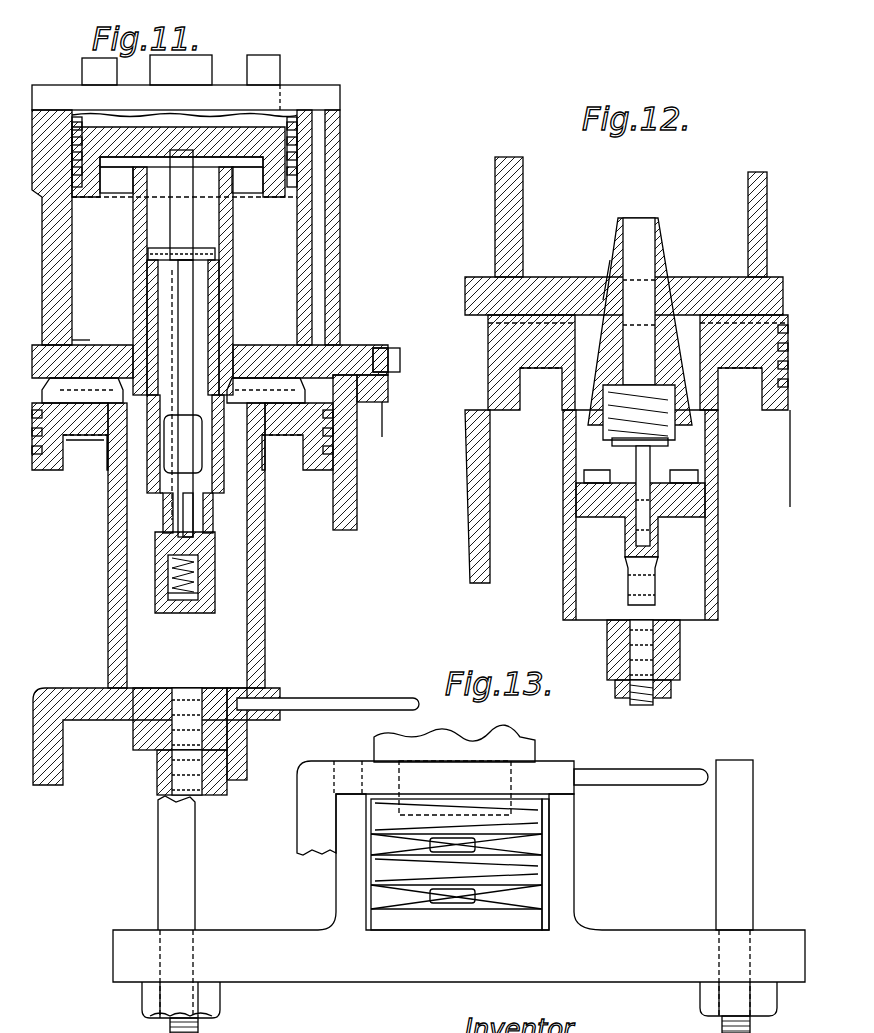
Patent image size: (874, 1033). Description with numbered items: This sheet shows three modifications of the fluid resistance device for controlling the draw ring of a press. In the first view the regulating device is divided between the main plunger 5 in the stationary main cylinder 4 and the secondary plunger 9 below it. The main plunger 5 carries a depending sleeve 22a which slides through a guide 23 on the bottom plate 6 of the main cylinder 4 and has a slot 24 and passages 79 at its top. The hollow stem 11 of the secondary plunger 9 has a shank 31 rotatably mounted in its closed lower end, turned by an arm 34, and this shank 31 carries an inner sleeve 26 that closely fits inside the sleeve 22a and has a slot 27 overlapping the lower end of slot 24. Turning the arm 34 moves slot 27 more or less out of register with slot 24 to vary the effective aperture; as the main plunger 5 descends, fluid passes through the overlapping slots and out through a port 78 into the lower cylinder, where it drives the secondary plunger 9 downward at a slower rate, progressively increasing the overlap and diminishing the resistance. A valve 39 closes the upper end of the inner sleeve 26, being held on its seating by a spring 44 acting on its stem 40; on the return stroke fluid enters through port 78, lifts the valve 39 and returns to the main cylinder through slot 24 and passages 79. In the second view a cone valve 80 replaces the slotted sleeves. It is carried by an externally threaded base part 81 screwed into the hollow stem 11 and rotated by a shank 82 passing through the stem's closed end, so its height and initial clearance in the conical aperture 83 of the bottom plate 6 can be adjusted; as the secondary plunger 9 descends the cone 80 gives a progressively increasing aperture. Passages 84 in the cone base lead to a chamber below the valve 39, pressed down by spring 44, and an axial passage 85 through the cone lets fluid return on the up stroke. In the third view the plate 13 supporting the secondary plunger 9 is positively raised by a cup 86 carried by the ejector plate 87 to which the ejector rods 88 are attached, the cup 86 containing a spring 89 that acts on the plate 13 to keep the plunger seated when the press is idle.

In FIG. 11, the main cylinder 4 is at (62, 245).
In FIG. 11, the main plunger 5 is at (283, 193).
In FIG. 11, the bottom plate 6 is at (90, 360).
In FIG. 12, the bottom plate 6 is at (510, 275).
In FIG. 11, the secondary plunger 9 is at (85, 440).
In FIG. 12, the secondary plunger 9 is at (525, 405).
In FIG. 13, the secondary plunger 9 is at (530, 752).
In FIG. 11, the hollow stem 11 is at (112, 637).
In FIG. 12, the hollow stem 11 is at (568, 563).
In FIG. 13, the plate 13 is at (405, 768).
In FIG. 11, the depending sleeve 22a is at (133, 290).
In FIG. 11, the guide 23 is at (130, 350).
In FIG. 11, the slot 24 is at (180, 215).
In FIG. 11, the sleeve 26 is at (217, 278).
In FIG. 11, the slot 27 is at (196, 310).
In FIG. 11, the shank 31 is at (160, 613).
In FIG. 11, the arm 34 is at (325, 698).
In FIG. 11, the valve 39 is at (217, 250).
In FIG. 12, the valve 39 is at (612, 442).
In FIG. 11, the stem 40 is at (188, 513).
In FIG. 11, the spring 44 is at (168, 575).
In FIG. 12, the spring 44 is at (685, 420).
In FIG. 11, the port 78 is at (220, 478).
In FIG. 11, the passages 79 is at (252, 160).
In FIG. 12, the cone valve 80 is at (672, 290).
In FIG. 12, the base part 81 is at (588, 500).
In FIG. 12, the shank 82 is at (638, 585).
In FIG. 12, the conical aperture 83 is at (608, 272).
In FIG. 12, the passages 84 is at (590, 478).
In FIG. 12, the axial passage 85 is at (638, 248).
In FIG. 13, the cup 86 is at (336, 838).
In FIG. 13, the ejector plate 87 is at (297, 915).
In FIG. 11, the ejector rods 88 is at (160, 845).
In FIG. 13, the ejector rods 88 is at (745, 770).
In FIG. 13, the spring 89 is at (375, 873).